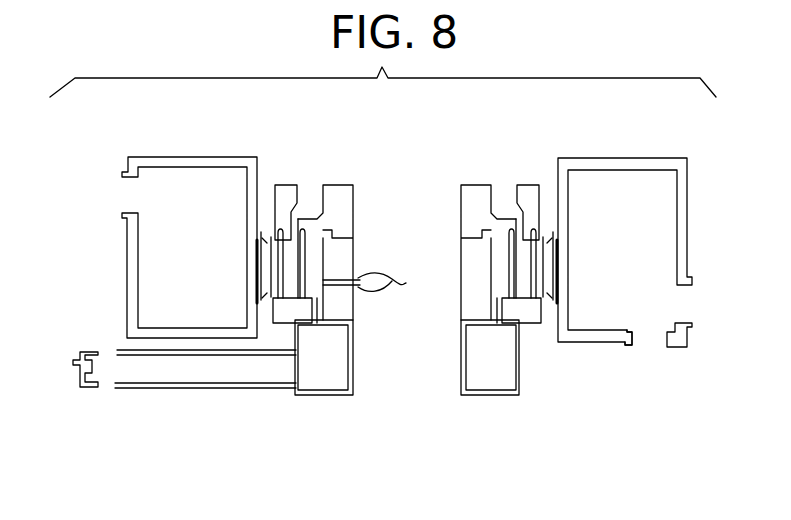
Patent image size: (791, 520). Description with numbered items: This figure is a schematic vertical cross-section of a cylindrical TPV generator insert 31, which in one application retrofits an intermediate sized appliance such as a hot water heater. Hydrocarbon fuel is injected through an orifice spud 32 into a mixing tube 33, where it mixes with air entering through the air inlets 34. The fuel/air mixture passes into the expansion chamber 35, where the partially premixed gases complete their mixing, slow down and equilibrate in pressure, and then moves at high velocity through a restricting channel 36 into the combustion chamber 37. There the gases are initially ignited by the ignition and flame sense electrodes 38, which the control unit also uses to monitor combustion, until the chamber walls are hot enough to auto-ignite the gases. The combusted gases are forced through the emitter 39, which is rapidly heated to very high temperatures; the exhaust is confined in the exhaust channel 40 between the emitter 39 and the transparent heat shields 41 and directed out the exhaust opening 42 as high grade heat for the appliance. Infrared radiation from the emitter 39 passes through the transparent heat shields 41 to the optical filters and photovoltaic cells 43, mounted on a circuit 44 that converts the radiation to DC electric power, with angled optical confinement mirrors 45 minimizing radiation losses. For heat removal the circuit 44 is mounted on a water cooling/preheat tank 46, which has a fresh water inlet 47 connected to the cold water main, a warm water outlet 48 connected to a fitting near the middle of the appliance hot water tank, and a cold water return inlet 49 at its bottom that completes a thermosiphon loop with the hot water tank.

The cylindrical TPV generator insert 31 is at (592, 452).
The orifice spud 32 is at (78, 375).
The mixing tube 33 is at (206, 387).
The air inlets 34 is at (106, 384).
The expansion chamber 35 is at (321, 376).
The restricting channel 36 is at (315, 312).
The combustion chamber 37 is at (312, 270).
The ignition and flame sense electrodes 38 is at (379, 283).
The emitter 39 is at (302, 258).
The exhaust channel 40 is at (292, 248).
The transparent heat shields 41 is at (283, 238).
The exhaust opening 42 is at (312, 185).
The optical filters and photovoltaic cells 43 is at (258, 283).
The circuit 44 is at (260, 268).
The angled optical confinement mirrors 45 is at (263, 240).
The water cooling/preheat tank 46 is at (233, 163).
The fresh water inlet 47 is at (647, 333).
The warm water outlet 48 is at (135, 195).
The cold water return inlet 49 is at (680, 297).